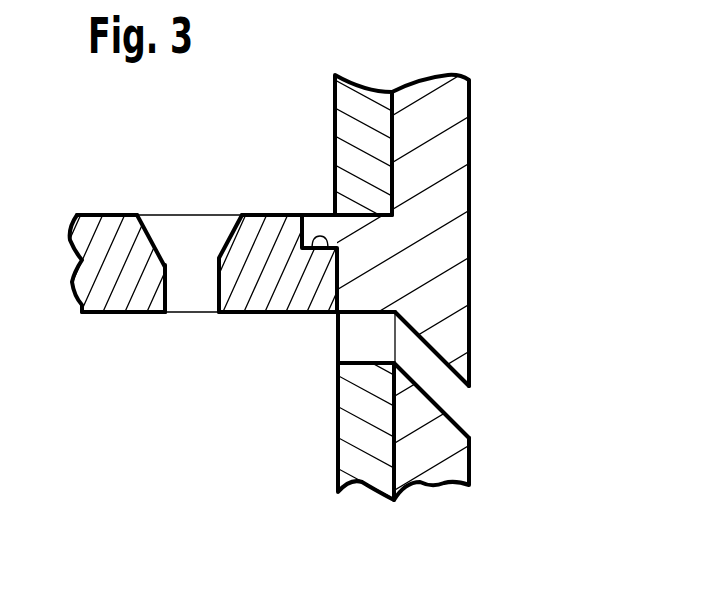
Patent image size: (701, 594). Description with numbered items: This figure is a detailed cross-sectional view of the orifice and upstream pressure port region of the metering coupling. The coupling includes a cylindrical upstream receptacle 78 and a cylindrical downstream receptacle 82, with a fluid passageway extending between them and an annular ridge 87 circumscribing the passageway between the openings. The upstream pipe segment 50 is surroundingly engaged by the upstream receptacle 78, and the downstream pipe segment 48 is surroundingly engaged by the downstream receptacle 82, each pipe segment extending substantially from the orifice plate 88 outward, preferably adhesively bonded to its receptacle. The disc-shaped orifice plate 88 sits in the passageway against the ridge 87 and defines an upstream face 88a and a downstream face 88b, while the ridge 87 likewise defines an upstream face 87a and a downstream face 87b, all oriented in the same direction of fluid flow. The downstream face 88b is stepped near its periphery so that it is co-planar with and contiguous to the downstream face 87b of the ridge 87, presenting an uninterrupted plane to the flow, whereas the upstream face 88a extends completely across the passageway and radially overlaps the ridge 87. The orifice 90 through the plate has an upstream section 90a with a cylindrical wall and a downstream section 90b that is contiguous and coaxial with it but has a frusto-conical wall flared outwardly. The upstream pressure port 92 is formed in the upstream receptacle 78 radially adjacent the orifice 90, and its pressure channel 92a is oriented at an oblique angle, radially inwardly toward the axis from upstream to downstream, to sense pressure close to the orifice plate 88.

The downstream pipe segment 48 is at (363, 92).
The downstream receptacle 82 is at (418, 87).
The annular ridge 87 is at (328, 232).
The upstream face of the ridge 87a is at (308, 314).
The downstream face of the ridge 87b is at (310, 213).
The orifice plate 88 is at (92, 287).
The upstream face of the orifice plate 88a is at (132, 316).
The downstream face of the orifice plate 88b is at (100, 213).
The orifice 90 is at (205, 273).
The upstream section of the orifice 90a is at (168, 292).
The downstream section of the orifice 90b is at (160, 213).
The upstream pressure port 92 is at (397, 350).
The pressure channel 92a is at (453, 400).
The upstream pipe segment 50 is at (375, 482).
The upstream receptacle 78 is at (420, 484).